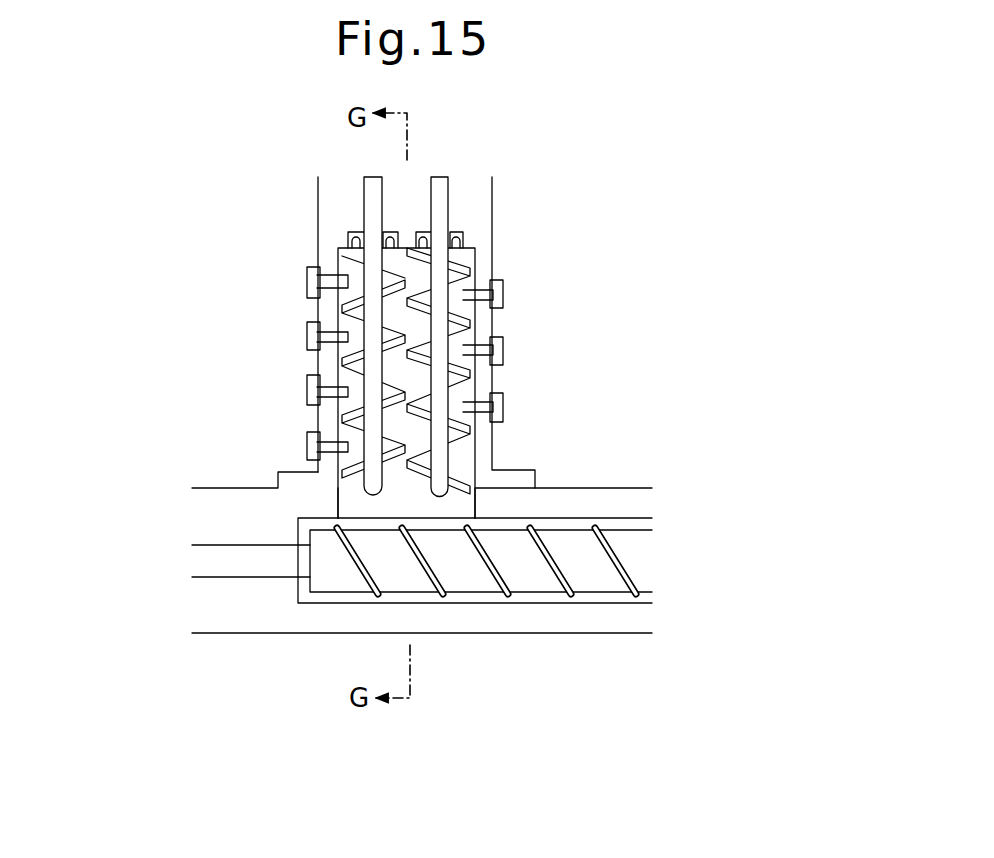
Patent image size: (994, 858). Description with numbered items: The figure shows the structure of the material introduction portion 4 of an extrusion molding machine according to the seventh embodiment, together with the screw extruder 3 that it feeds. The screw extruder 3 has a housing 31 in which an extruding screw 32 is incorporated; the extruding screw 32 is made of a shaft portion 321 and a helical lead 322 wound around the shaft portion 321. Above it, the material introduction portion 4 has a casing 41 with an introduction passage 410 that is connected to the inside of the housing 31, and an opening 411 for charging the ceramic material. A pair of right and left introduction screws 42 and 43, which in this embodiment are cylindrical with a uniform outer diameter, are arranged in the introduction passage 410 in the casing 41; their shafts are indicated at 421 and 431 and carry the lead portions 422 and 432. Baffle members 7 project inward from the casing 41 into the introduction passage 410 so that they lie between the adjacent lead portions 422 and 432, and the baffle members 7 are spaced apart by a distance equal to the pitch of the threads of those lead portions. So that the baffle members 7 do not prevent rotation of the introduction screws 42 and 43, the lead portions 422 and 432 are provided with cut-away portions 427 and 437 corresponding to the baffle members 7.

The screw extruder 3 is at (482, 628).
The housing 31 is at (551, 624).
The extruding screw 32 is at (514, 611).
The shaft portion 321 is at (598, 580).
The helical lead 322 is at (551, 558).
The material introduction portion 4 is at (417, 308).
The casing 41 is at (482, 383).
The introduction passage 410 is at (469, 460).
The opening 411 is at (338, 267).
The screw shaft 421 is at (445, 200).
The lead portion 422 is at (470, 425).
The cut-away portion 427 is at (462, 267).
The introduction screw 42 is at (501, 297).
The introduction screw 43 is at (301, 304).
The screw shaft 431 is at (370, 208).
The lead portion 432 is at (337, 413).
The cut-away portion 437 is at (380, 265).
The baffle member 7 is at (328, 283).